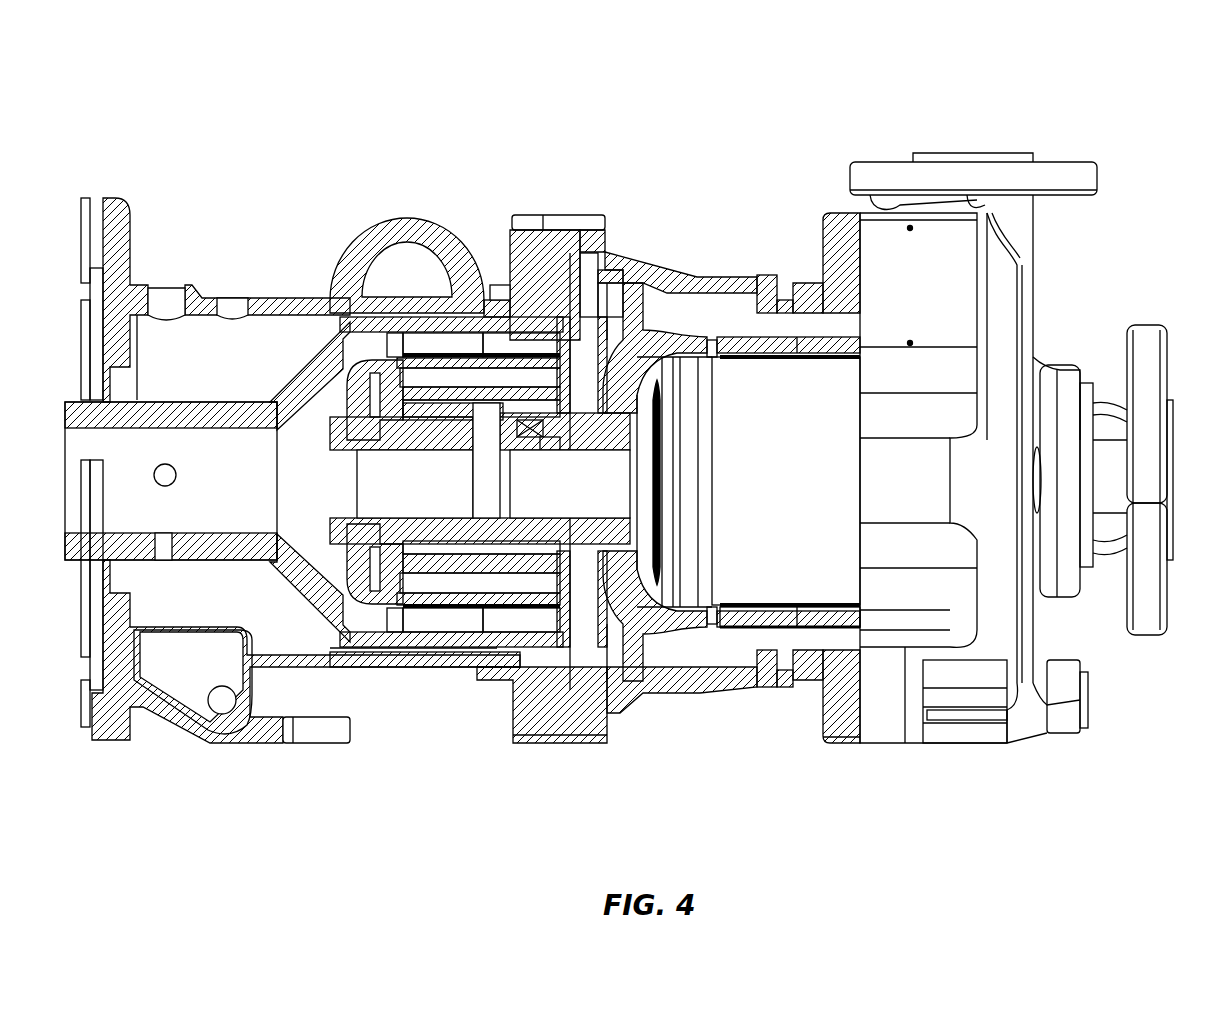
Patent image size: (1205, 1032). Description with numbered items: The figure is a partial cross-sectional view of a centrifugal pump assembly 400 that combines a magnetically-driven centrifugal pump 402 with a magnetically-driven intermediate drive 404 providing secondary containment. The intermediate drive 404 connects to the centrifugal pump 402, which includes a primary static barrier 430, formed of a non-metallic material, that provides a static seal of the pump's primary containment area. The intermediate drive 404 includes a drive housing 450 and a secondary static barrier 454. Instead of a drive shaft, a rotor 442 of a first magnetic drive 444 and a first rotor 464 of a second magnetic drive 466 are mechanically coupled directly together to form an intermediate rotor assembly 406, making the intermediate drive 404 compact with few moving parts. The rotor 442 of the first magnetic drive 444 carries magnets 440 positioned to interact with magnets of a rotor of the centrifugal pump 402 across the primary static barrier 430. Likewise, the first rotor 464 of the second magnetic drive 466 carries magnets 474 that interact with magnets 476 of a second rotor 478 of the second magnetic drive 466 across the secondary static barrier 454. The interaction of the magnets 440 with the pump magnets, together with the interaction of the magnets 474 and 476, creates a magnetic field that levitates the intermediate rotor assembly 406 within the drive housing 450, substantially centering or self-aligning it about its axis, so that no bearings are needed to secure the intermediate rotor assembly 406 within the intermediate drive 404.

The centrifugal pump assembly 400 is at (168, 128).
The centrifugal pump 402 is at (833, 157).
The intermediate drive 404 is at (438, 168).
The intermediate rotor assembly 406 is at (569, 398).
The primary static barrier 430 is at (797, 508).
The magnets 440 is at (825, 617).
The rotor 442 is at (667, 293).
The first magnetic drive 444 is at (662, 652).
The drive housing 450 is at (630, 242).
The secondary static barrier 454 is at (350, 415).
The first rotor 464 is at (565, 578).
The second magnetic drive 466 is at (332, 300).
The magnets 474 is at (458, 385).
The magnets 476 is at (497, 623).
The second rotor 478 is at (363, 633).